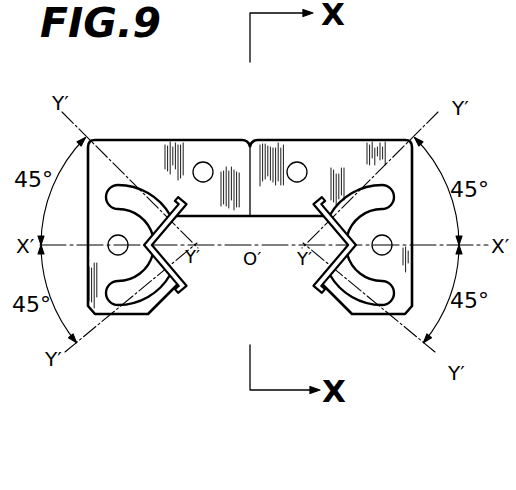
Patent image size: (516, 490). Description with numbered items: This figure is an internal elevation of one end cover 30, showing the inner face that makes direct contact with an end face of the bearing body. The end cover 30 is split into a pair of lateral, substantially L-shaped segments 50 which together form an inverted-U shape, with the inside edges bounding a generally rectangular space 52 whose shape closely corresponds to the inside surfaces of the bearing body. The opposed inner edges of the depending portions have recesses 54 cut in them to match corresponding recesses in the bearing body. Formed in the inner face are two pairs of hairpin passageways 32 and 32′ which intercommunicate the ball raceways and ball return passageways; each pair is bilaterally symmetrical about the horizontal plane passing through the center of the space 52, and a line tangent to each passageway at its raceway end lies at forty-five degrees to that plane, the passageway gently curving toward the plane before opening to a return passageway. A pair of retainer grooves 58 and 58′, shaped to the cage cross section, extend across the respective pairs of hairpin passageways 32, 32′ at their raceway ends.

The end cover 30 is at (254, 211).
The end cover segment 50 is at (152, 158).
The hairpin passageway 32 is at (346, 200).
The hairpin passageway 32′ is at (118, 197).
The generally rectangular space 52 is at (288, 296).
The recess 54 is at (165, 243).
The retainer groove 58 is at (315, 201).
The retainer groove 58′ is at (184, 201).